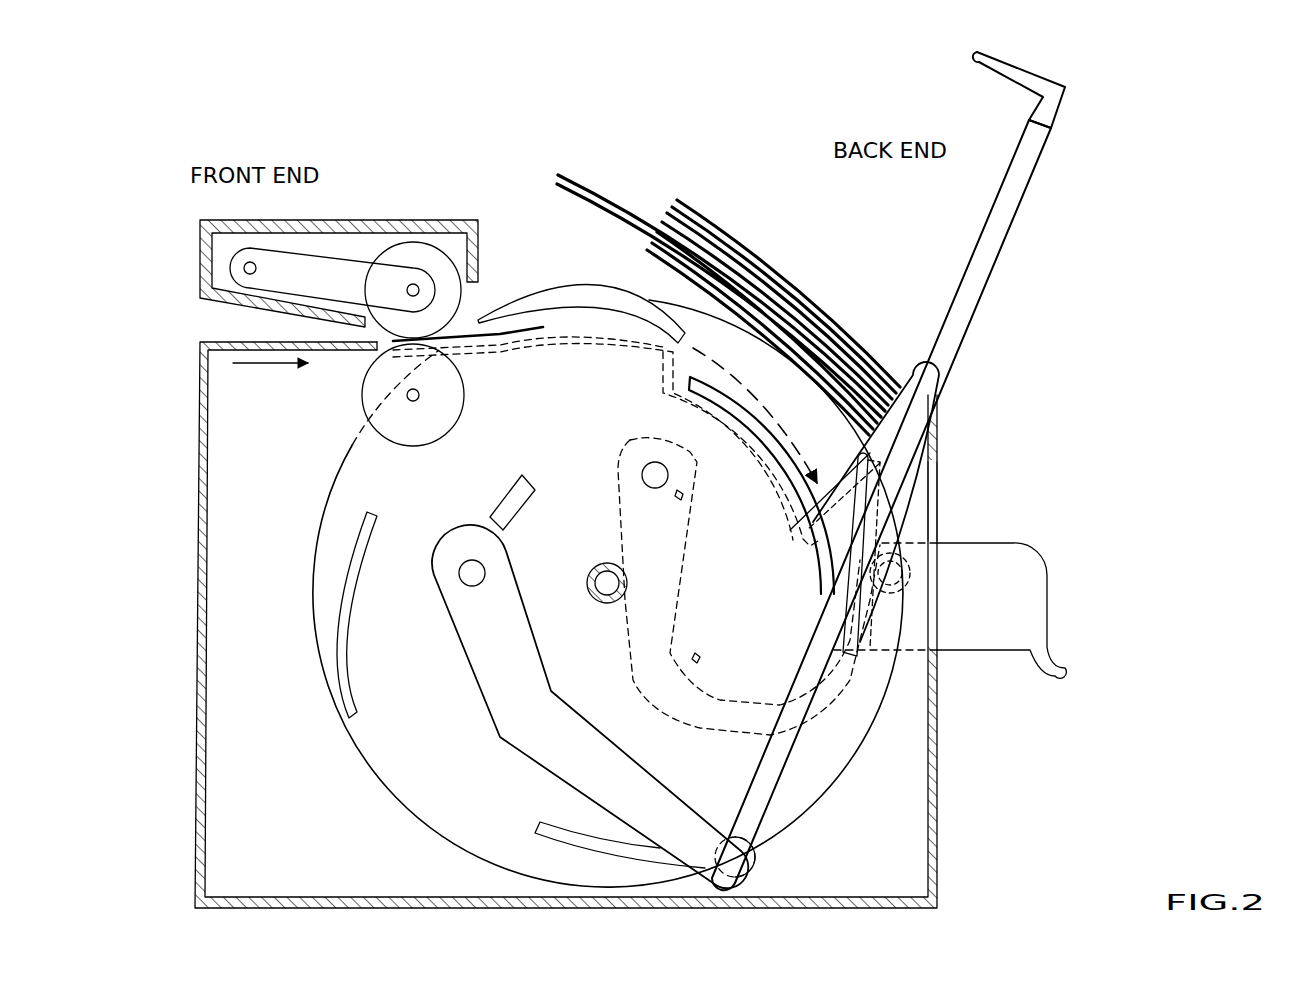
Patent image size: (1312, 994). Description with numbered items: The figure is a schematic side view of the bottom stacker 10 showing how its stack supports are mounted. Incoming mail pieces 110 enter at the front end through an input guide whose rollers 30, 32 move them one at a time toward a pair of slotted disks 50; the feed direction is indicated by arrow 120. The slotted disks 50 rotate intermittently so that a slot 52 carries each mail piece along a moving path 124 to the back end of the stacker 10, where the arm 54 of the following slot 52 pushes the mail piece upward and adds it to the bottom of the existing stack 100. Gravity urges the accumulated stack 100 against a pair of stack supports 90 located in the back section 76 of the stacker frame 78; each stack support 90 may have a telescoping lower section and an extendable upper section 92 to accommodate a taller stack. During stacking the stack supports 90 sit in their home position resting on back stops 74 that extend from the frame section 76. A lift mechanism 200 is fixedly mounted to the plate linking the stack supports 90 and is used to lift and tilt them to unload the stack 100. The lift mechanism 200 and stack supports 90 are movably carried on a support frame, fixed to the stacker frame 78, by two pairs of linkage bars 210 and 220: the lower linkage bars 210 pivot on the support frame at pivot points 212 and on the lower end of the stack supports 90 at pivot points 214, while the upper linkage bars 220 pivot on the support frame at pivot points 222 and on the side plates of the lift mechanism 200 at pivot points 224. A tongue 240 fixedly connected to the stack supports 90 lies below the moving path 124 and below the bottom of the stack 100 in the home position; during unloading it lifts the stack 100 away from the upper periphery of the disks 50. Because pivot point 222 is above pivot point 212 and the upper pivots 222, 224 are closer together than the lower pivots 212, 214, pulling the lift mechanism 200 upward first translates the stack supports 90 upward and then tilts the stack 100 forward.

The bottom stacker 10 is at (546, 126).
The roller 30 is at (430, 255).
The roller 32 is at (463, 397).
The slotted disks 50 is at (403, 750).
The slot 52 is at (585, 322).
The arm 54 is at (628, 288).
The back stops 74 is at (937, 441).
The back section 76 is at (940, 524).
The stacker frame 78 is at (176, 757).
The stack supports 90 is at (1031, 157).
The extendable upper section 92 is at (1027, 77).
The stack 100 is at (806, 258).
The mail pieces 110 is at (270, 341).
The feed direction 120 is at (268, 367).
The moving path 124 is at (750, 383).
The lift mechanism 200 is at (1007, 543).
The linkage bars 210 is at (533, 757).
The pivot point 212 is at (460, 571).
The pivot points 214 is at (756, 855).
The linkage bars 220 is at (838, 722).
The pivot point 222 is at (643, 470).
The pivot points 224 is at (898, 577).
The tongue 240 is at (797, 484).